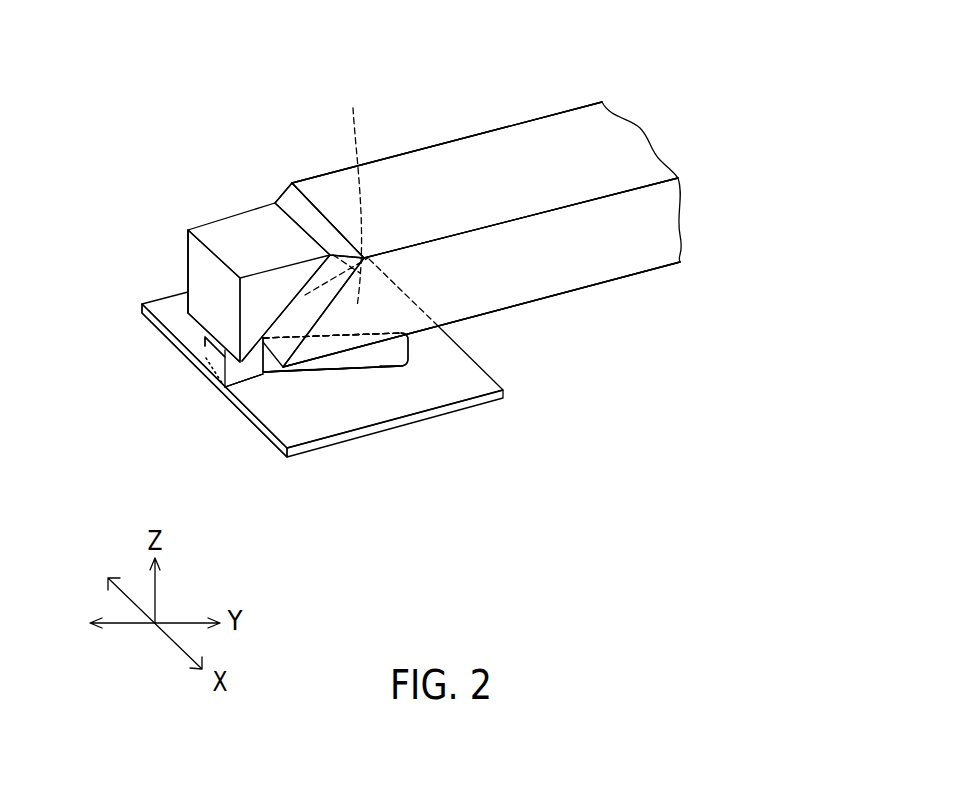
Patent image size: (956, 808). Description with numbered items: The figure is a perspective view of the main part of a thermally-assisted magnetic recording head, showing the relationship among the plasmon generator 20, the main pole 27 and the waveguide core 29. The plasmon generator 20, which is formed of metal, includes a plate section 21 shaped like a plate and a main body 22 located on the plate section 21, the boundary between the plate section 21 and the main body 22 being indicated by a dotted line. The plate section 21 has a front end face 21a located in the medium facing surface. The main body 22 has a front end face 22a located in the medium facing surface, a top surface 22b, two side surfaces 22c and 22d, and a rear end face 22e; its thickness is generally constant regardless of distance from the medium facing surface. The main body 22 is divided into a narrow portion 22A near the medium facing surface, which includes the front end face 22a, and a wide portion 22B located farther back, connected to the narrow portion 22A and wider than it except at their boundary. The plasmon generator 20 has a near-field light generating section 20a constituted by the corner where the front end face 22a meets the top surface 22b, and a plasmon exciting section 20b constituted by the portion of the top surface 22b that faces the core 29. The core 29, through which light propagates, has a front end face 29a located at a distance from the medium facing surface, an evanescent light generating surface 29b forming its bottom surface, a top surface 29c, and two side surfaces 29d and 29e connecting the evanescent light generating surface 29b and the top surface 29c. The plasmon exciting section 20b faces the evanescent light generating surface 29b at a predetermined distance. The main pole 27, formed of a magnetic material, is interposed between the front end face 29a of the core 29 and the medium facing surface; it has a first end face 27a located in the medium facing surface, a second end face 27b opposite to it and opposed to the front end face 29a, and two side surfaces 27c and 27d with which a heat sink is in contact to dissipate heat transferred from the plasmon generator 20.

The plasmon generator 20 is at (425, 516).
The near-field light generating section 20a is at (205, 342).
The plasmon exciting section 20b is at (356, 176).
The plate section 21 is at (461, 428).
The front end face 21a is at (152, 319).
The main body 22 is at (403, 381).
The front end face 22a is at (212, 360).
The top surface 22b is at (357, 307).
The side surface 22c is at (335, 280).
The side surface 22d is at (398, 350).
The rear end face 22e is at (387, 303).
The narrow portion 22A is at (263, 378).
The wide portion 22B is at (338, 378).
The main pole 27 is at (227, 236).
The first end face 27a is at (210, 291).
The second end face 27b is at (372, 378).
The side surface 27c is at (188, 250).
The side surface 27d is at (315, 380).
The core 29 is at (607, 146).
The front end face 29a is at (293, 203).
The evanescent light generating surface 29b is at (563, 295).
The top surface 29c is at (485, 152).
The side surface 29d is at (538, 117).
The side surface 29e is at (612, 252).